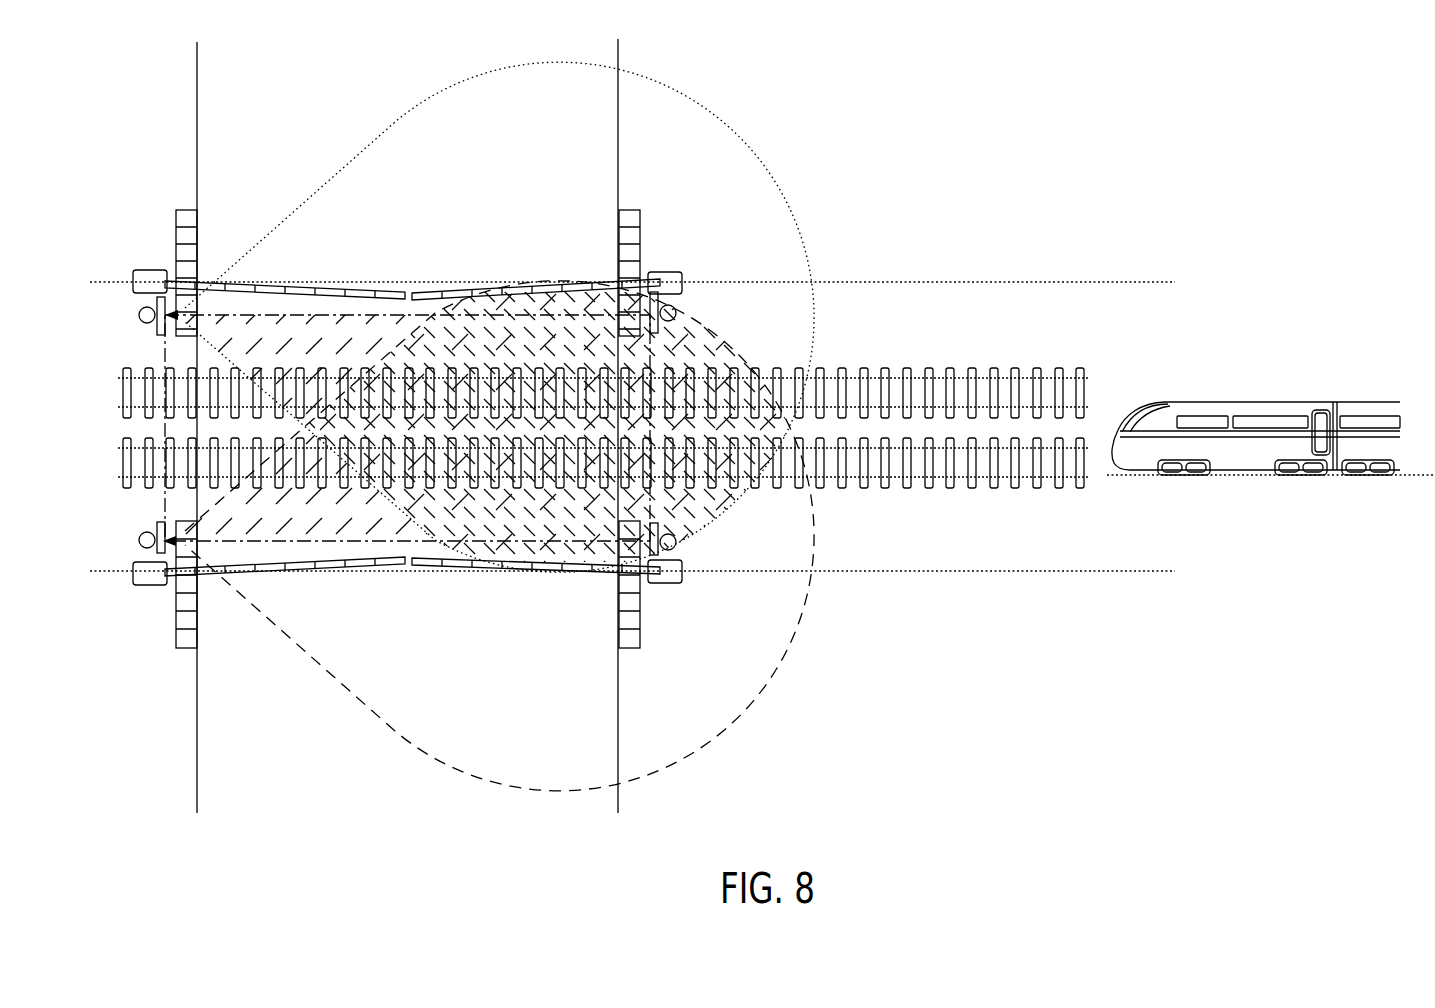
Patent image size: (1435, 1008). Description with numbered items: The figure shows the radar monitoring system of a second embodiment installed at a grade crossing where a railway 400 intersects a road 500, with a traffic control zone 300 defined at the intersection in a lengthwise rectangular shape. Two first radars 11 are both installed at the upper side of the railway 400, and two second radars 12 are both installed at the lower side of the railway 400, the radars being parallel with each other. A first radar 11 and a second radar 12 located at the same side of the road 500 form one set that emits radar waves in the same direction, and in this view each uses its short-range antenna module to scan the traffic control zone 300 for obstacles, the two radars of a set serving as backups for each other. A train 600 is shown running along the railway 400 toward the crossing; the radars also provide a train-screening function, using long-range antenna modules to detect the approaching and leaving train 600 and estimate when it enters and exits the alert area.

The first radar 11 is at (163, 298).
The second radar 12 is at (163, 549).
The traffic control zone 300 is at (355, 290).
The railway 400 is at (991, 290).
The road 500 is at (629, 48).
The train 600 is at (1287, 404).